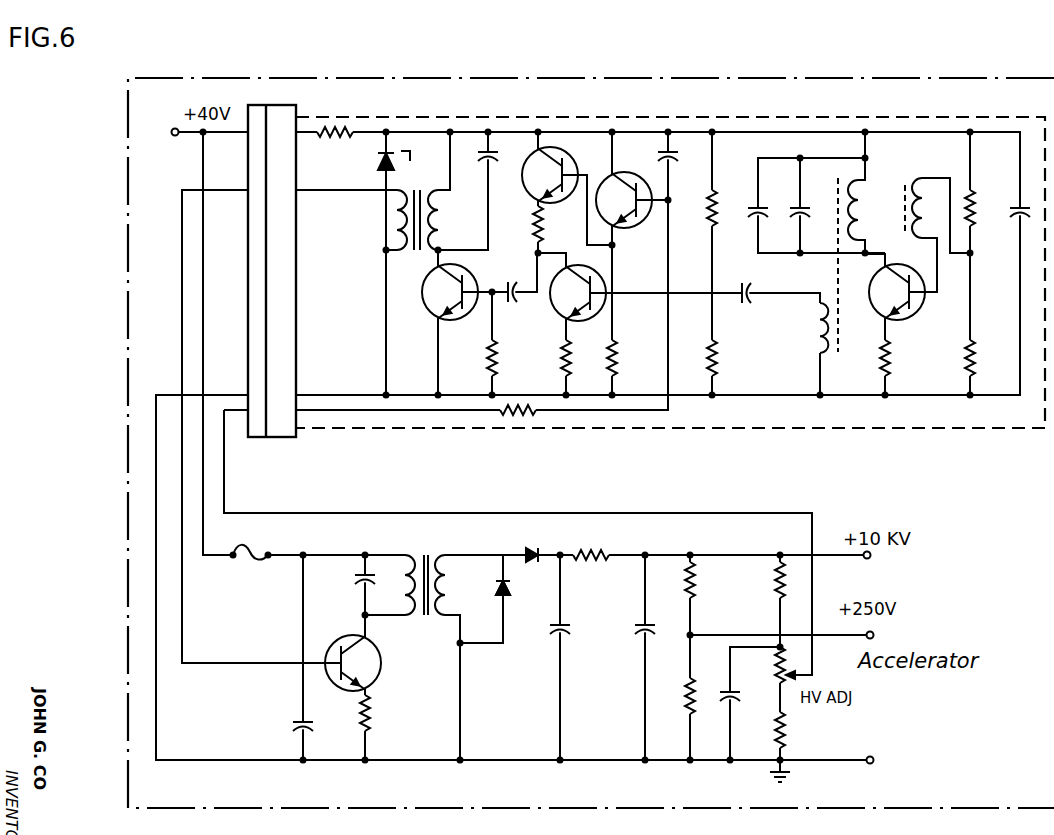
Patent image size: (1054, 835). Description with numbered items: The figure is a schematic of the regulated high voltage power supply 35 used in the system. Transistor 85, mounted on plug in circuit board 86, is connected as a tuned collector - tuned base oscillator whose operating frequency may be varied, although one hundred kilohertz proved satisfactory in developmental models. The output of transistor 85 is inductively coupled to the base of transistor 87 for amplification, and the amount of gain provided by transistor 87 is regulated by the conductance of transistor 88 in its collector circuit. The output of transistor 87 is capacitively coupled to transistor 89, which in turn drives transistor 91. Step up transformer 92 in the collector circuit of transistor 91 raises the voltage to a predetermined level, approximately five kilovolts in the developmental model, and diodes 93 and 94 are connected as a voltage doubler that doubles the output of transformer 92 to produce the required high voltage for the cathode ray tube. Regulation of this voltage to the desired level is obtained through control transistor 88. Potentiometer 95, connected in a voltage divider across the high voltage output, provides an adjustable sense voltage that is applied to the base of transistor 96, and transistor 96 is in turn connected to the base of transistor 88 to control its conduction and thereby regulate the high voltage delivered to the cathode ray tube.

The high voltage power supply 35 is at (128, 333).
The transistor 85 is at (890, 318).
The plug in circuit board 86 is at (922, 430).
The transistor 87 is at (556, 313).
The transistor 88 is at (571, 168).
The transistor 89 is at (423, 291).
The transistor 91 is at (380, 667).
The step up transformer 92 is at (421, 551).
The diode 93 is at (493, 594).
The diode 94 is at (528, 548).
The potentiometer 95 is at (776, 675).
The transistor 96 is at (644, 222).